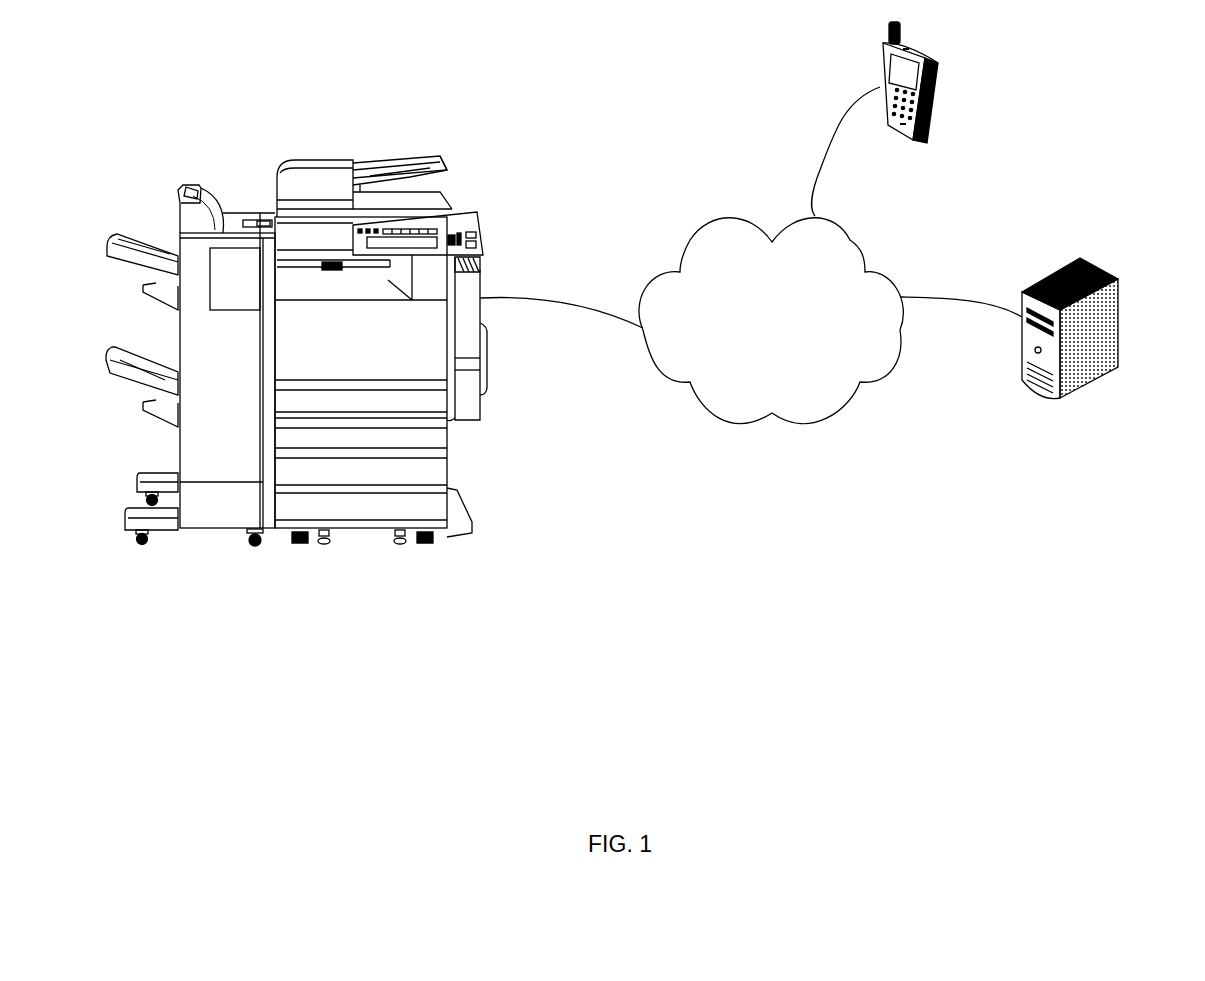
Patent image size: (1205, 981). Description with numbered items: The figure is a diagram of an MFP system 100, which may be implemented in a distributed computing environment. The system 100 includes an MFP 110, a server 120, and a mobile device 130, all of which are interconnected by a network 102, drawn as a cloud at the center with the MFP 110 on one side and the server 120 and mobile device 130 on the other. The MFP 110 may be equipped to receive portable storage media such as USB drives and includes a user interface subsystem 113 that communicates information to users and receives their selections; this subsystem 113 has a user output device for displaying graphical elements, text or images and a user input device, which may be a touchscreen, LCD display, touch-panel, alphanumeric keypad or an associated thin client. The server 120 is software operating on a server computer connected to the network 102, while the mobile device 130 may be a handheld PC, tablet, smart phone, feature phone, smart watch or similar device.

The MFP system 100 is at (699, 91).
The MFP 110 is at (385, 160).
The user interface subsystem 113 is at (428, 238).
The network 102 is at (751, 321).
The mobile device 130 is at (938, 87).
The server 120 is at (1118, 287).